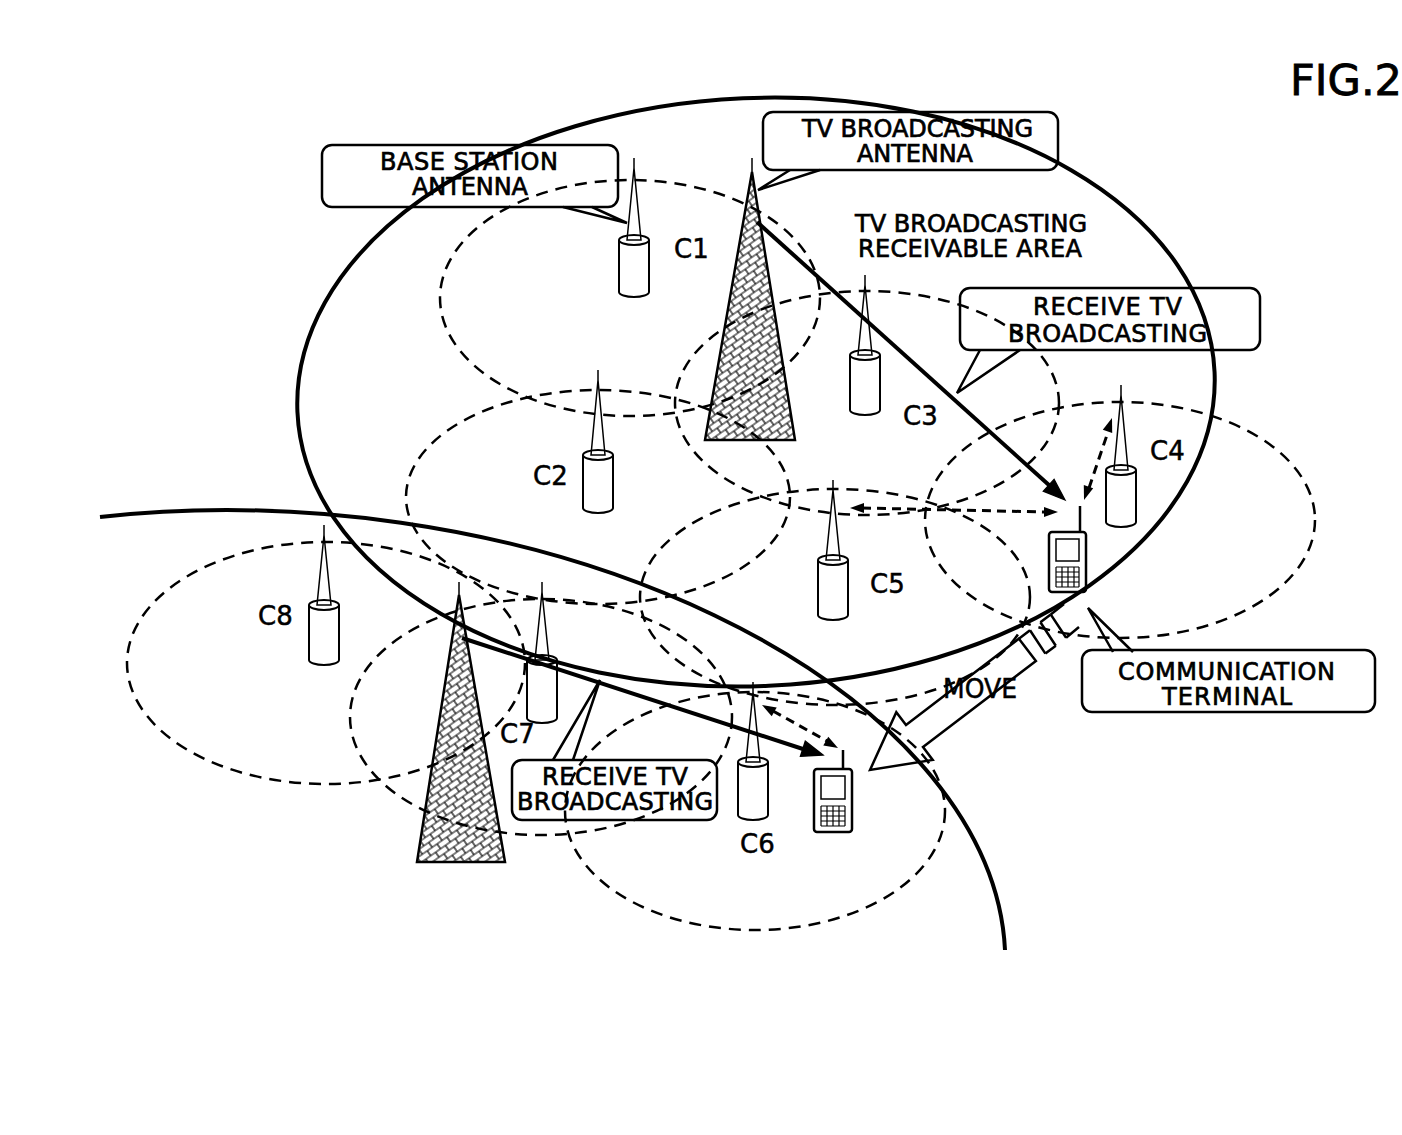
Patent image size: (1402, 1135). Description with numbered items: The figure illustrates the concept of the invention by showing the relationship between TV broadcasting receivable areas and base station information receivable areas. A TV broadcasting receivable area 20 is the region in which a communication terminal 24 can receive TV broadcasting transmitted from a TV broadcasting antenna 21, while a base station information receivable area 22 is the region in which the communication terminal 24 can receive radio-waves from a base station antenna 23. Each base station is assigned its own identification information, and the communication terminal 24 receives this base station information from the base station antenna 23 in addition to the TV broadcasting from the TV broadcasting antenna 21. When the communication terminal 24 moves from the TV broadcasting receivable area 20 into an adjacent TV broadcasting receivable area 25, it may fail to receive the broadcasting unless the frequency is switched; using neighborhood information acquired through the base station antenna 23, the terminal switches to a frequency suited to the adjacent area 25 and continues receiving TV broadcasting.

The TV broadcasting receivable area 20 is at (317, 305).
The TV broadcasting antenna 21 is at (795, 430).
The base station information receivable area 22 is at (440, 331).
The base station antenna 23 is at (620, 266).
The communication terminal 24 is at (1088, 565).
The adjacent TV broadcasting receivable area 25 is at (992, 860).